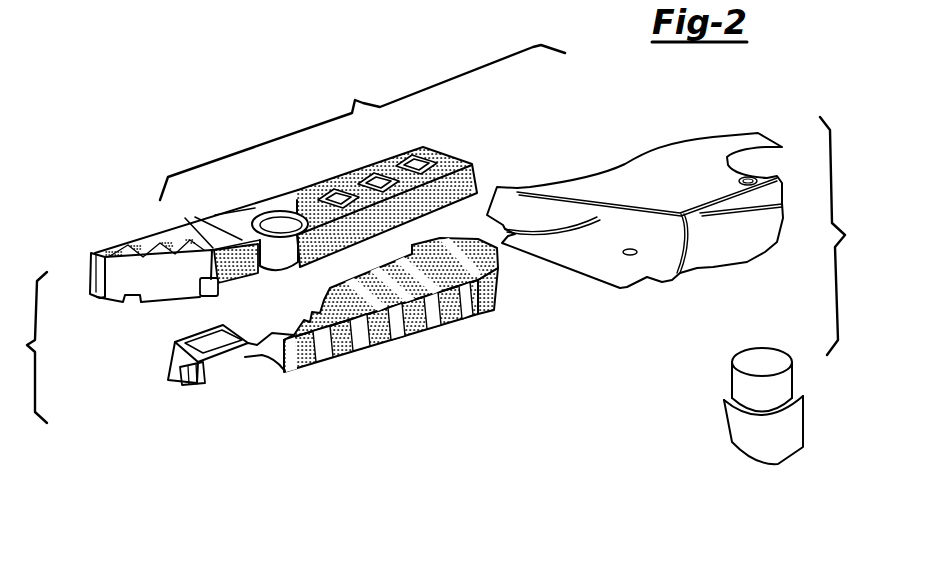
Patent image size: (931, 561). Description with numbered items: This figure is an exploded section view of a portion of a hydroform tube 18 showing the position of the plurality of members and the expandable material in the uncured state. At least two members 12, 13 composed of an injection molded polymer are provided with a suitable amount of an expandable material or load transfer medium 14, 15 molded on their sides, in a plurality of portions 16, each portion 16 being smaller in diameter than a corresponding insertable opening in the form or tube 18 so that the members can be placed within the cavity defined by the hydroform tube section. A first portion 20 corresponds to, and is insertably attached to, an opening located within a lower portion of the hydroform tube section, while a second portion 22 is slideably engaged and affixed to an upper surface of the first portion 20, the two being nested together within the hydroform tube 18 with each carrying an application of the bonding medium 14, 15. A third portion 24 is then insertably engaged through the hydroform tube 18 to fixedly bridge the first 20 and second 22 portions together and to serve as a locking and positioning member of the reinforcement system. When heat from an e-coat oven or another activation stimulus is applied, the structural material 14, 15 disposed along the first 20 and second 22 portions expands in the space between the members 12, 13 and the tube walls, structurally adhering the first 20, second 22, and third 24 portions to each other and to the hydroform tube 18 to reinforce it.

The member 12 is at (131, 308).
The member 13 is at (193, 386).
The expandable material 14 is at (297, 241).
The expandable material 15 is at (307, 363).
The portions 16 is at (505, 162).
The hydroform tube 18 is at (668, 215).
The first portion 20 is at (192, 385).
The second portion 22 is at (80, 252).
The third portion 24 is at (728, 421).